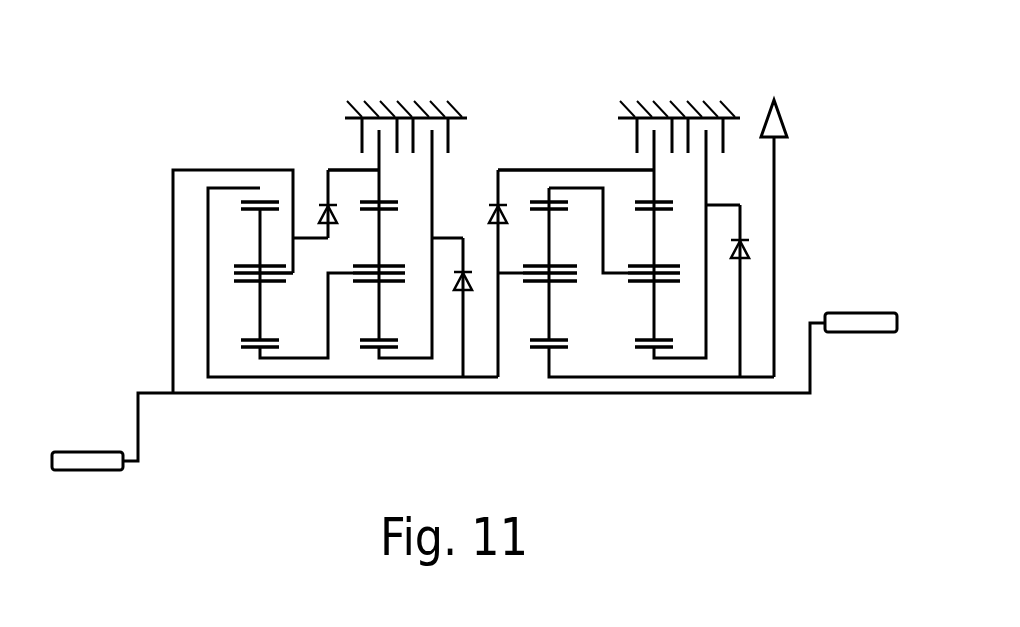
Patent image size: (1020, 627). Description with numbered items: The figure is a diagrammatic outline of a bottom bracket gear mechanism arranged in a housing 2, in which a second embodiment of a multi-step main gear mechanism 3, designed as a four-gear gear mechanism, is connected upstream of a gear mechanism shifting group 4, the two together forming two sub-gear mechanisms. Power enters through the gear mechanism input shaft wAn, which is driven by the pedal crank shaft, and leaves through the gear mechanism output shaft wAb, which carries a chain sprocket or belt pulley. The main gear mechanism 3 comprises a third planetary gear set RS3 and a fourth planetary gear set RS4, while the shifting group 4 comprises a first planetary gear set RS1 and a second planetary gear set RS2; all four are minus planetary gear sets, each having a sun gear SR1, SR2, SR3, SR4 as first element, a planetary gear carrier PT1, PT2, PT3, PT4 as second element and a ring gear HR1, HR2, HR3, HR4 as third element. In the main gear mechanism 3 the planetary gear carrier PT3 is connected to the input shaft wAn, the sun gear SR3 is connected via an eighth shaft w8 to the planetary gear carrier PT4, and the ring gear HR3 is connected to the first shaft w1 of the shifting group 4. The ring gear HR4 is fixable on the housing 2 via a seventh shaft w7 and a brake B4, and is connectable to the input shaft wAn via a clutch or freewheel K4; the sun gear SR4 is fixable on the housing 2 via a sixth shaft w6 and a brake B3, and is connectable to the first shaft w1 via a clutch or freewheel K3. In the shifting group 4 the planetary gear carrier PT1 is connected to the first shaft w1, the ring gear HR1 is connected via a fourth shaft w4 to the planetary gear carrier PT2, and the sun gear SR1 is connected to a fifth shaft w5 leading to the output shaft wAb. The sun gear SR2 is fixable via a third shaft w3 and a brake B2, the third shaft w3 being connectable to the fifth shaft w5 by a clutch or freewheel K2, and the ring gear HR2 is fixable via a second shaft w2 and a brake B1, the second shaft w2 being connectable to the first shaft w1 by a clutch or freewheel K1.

The housing 2 is at (728, 103).
The main gear mechanism 3 is at (318, 166).
The gear mechanism shifting group 4 is at (588, 178).
The first planetary gear set RS1 is at (554, 305).
The second planetary gear set RS2 is at (658, 276).
The third planetary gear set RS3 is at (264, 316).
The fourth planetary gear set RS4 is at (384, 276).
The ring gear HR1 is at (540, 200).
The ring gear HR2 is at (650, 200).
The ring gear HR3 is at (270, 200).
The ring gear HR4 is at (368, 200).
The planetary gear carrier PT1 is at (521, 279).
The planetary gear carrier PT2 is at (627, 280).
The planetary gear carrier PT3 is at (232, 273).
The planetary gear carrier PT4 is at (355, 279).
The sun gear SR1 is at (540, 349).
The sun gear SR2 is at (643, 349).
The sun gear SR3 is at (248, 349).
The sun gear SR4 is at (370, 349).
The fifth shifting element K1 is at (505, 257).
The sixth shifting element K2 is at (745, 276).
The seventh shifting element K3 is at (456, 307).
The eighth shifting element K4 is at (333, 212).
The first shifting element B1 is at (654, 113).
The second shifting element B2 is at (706, 113).
The third shifting element B3 is at (431, 112).
The fourth shifting element B4 is at (380, 112).
The first shaft w1 is at (353, 282).
The second shaft w2 is at (576, 160).
The third shaft w3 is at (697, 244).
The fourth shaft w4 is at (588, 230).
The fifth shaft w5 is at (661, 362).
The sixth shaft w6 is at (421, 245).
The seventh shaft w7 is at (353, 186).
The eighth shaft w8 is at (306, 316).
The gear mechanism input shaft wAn is at (474, 307).
The gear mechanism output shaft wAb is at (789, 238).